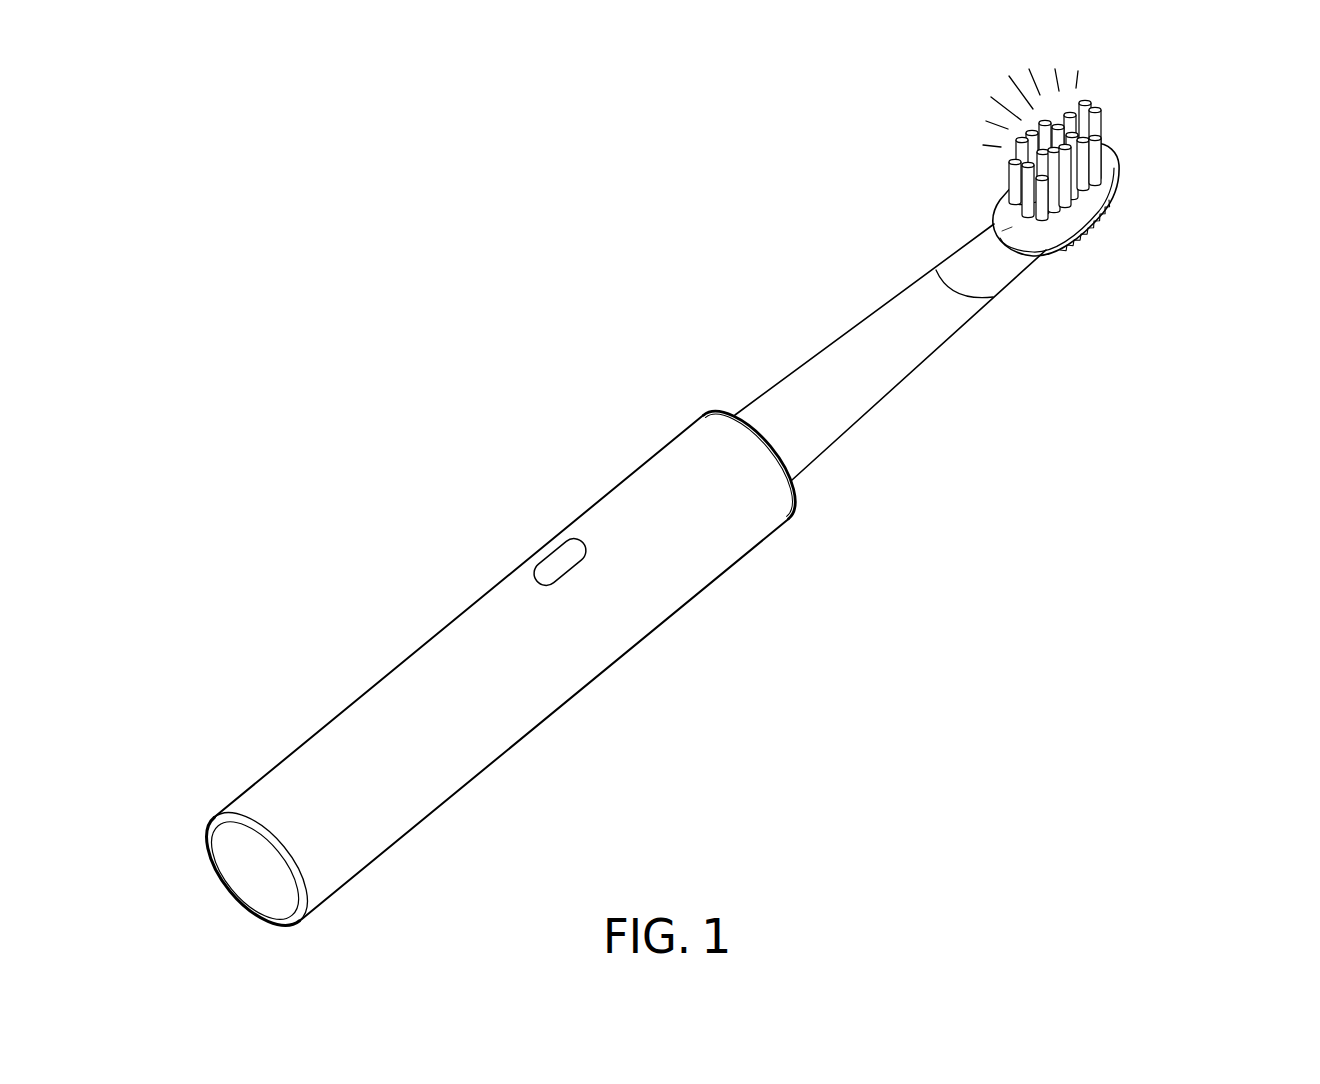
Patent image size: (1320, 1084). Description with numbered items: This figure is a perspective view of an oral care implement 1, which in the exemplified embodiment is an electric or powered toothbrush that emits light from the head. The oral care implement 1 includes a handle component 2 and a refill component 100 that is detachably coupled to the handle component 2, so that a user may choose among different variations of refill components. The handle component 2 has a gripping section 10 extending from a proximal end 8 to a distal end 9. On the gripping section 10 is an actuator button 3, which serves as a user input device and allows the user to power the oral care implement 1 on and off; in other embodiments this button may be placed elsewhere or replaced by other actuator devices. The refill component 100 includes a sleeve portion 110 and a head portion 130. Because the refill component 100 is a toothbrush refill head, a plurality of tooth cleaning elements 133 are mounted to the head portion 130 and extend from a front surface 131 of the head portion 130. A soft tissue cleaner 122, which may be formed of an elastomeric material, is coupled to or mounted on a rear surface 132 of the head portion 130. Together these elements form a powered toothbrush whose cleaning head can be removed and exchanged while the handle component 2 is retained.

The oral care implement 1 is at (669, 403).
The handle component 2 is at (407, 626).
The actuator button 3 is at (568, 566).
The proximal end 8 is at (280, 908).
The distal end 9 is at (793, 490).
The gripping section 10 is at (540, 683).
The refill component 100 is at (1009, 309).
The sleeve portion 110 is at (902, 352).
The soft tissue cleaner 122 is at (1113, 237).
The head portion 130 is at (1090, 210).
The front surface 131 is at (1012, 223).
The rear surface 132 is at (1058, 248).
The tooth cleaning elements 133 is at (1120, 117).